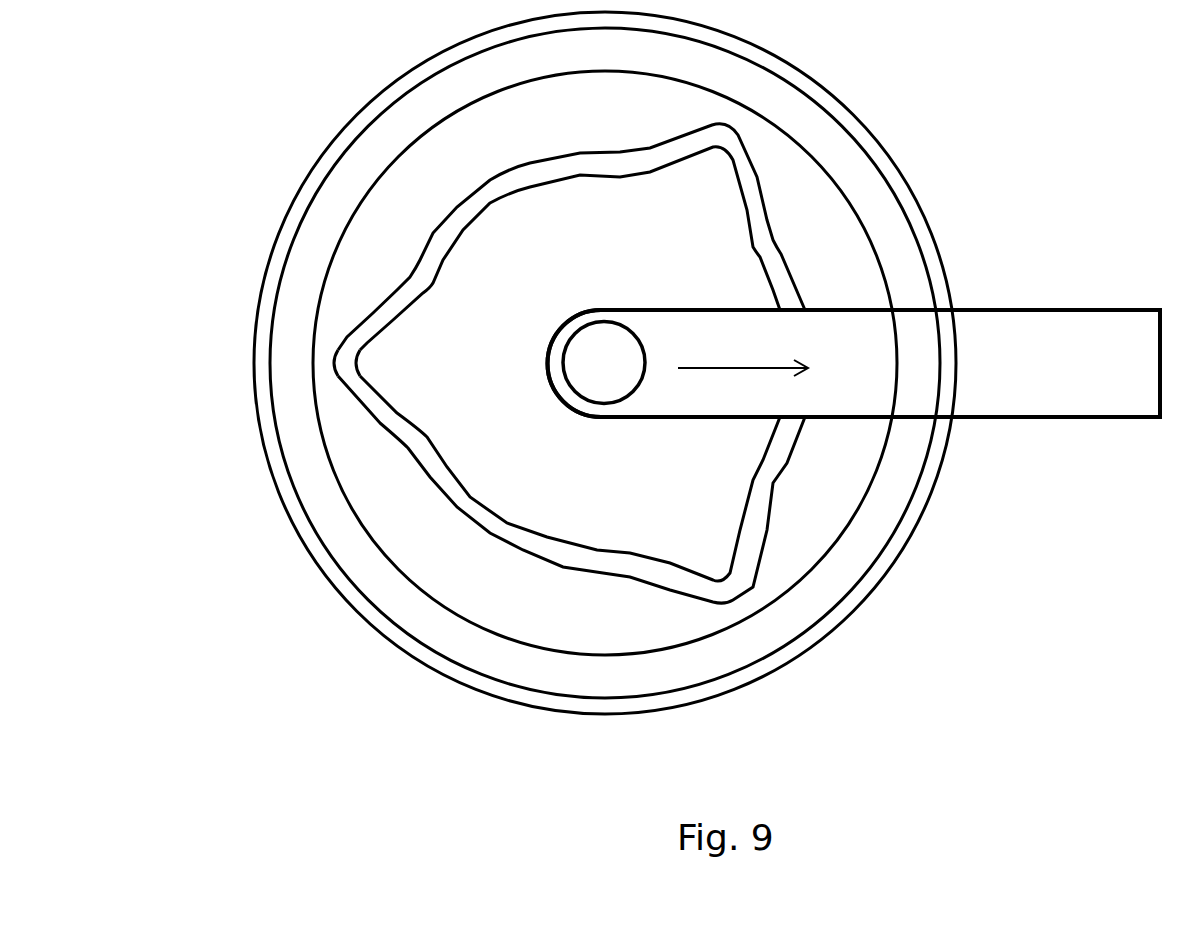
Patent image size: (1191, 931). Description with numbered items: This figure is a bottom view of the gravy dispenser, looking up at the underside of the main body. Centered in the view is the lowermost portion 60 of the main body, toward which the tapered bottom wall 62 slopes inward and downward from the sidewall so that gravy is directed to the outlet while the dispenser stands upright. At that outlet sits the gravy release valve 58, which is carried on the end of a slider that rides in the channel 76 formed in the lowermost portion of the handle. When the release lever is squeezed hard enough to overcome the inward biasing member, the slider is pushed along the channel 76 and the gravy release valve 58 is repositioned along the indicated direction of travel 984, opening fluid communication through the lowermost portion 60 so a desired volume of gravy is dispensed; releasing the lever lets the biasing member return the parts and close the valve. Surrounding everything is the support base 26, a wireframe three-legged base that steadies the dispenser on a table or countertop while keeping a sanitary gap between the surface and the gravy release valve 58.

The support base 26 is at (333, 353).
The gravy release valve 58 is at (628, 332).
The lowermost portion 60 is at (550, 400).
The tapered bottom wall 62 is at (567, 633).
The channel 76 is at (1075, 417).
The direction of movement 984 is at (737, 370).